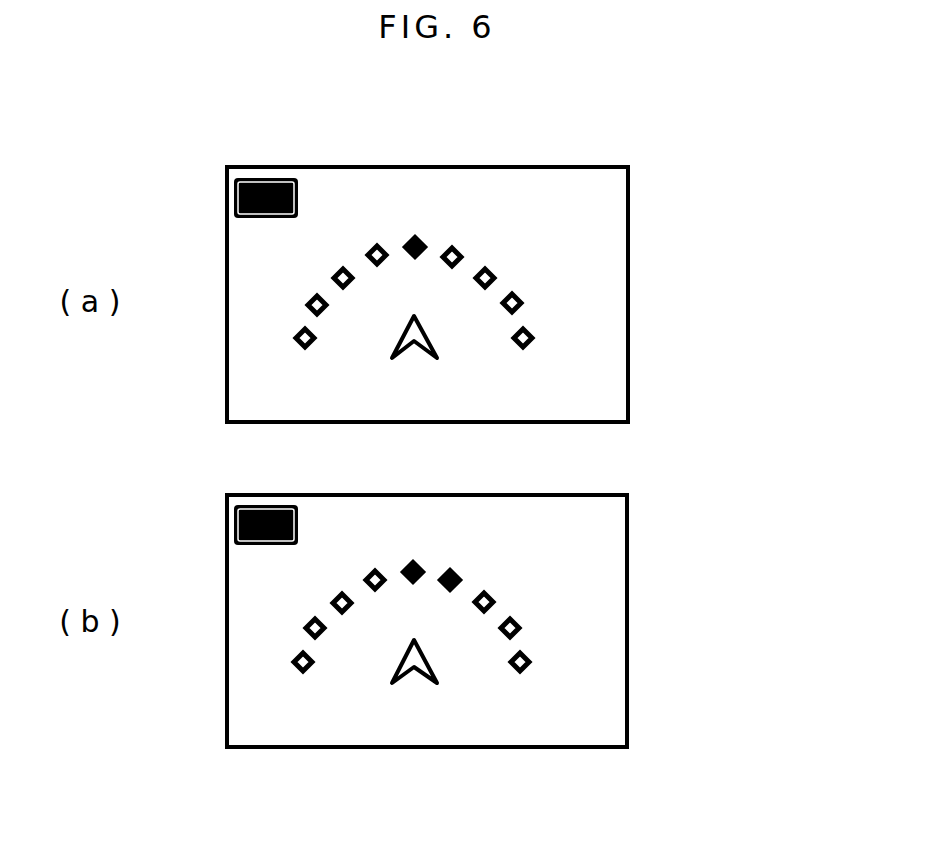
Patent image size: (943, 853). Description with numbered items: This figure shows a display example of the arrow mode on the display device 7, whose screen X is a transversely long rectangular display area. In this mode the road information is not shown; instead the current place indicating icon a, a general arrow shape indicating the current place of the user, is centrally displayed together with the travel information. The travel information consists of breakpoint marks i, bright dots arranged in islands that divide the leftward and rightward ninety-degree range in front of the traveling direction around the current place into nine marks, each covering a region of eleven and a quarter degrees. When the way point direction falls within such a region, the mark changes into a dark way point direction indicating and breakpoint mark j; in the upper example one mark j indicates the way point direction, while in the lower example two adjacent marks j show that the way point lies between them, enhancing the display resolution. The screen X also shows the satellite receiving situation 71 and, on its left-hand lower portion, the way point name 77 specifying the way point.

The display device 7 is at (278, 156).
The satellite receiving situation 71 is at (260, 219).
The way point name 77 is at (258, 390).
The breakpoint marks i is at (366, 253).
The way point direction indicating and breakpoint marks j is at (411, 243).
The current place indicating icon a is at (430, 340).
The screen X is at (461, 205).